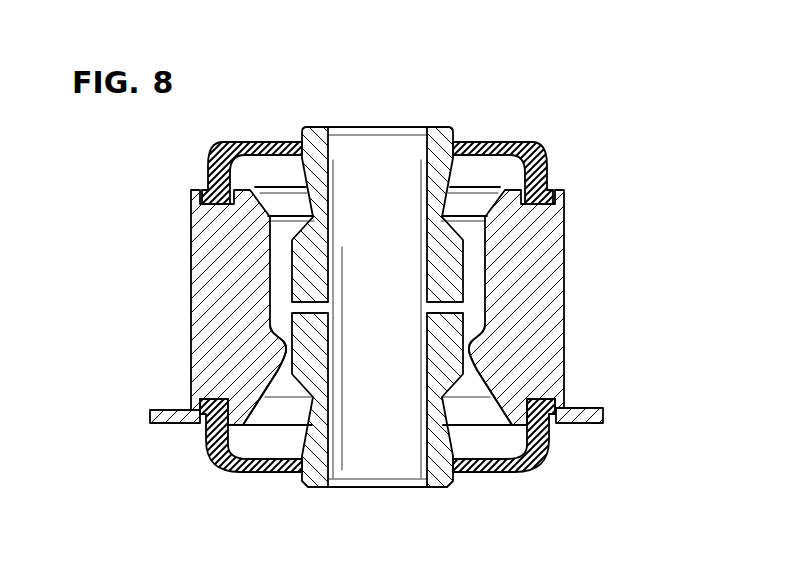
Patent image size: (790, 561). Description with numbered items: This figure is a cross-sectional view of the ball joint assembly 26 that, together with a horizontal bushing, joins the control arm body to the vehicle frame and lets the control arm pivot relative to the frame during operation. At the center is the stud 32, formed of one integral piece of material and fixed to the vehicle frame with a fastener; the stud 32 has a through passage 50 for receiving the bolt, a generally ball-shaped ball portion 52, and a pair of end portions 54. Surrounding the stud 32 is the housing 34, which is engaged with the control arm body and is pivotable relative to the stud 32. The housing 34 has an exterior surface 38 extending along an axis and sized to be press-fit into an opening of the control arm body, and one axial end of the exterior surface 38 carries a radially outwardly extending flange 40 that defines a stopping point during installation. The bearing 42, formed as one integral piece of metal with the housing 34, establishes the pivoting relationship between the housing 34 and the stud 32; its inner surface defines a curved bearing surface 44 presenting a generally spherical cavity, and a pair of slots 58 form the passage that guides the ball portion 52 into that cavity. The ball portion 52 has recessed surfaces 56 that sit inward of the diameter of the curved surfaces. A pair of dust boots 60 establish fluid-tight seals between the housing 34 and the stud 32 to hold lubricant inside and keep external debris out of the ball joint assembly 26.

The ball joint assembly 26 is at (566, 150).
The stud 32 is at (448, 124).
The housing 34 is at (572, 363).
The exterior surface 38 is at (565, 297).
The flange 40 is at (583, 420).
The bearing 42 is at (240, 304).
The curved bearing surface 44 is at (207, 426).
The through passage 50 is at (331, 150).
The ball portion 52 is at (443, 363).
The end portions 54 is at (441, 143).
The recessed surfaces 56 is at (295, 273).
The slots 58 is at (258, 247).
The dust boots 60 is at (512, 146).